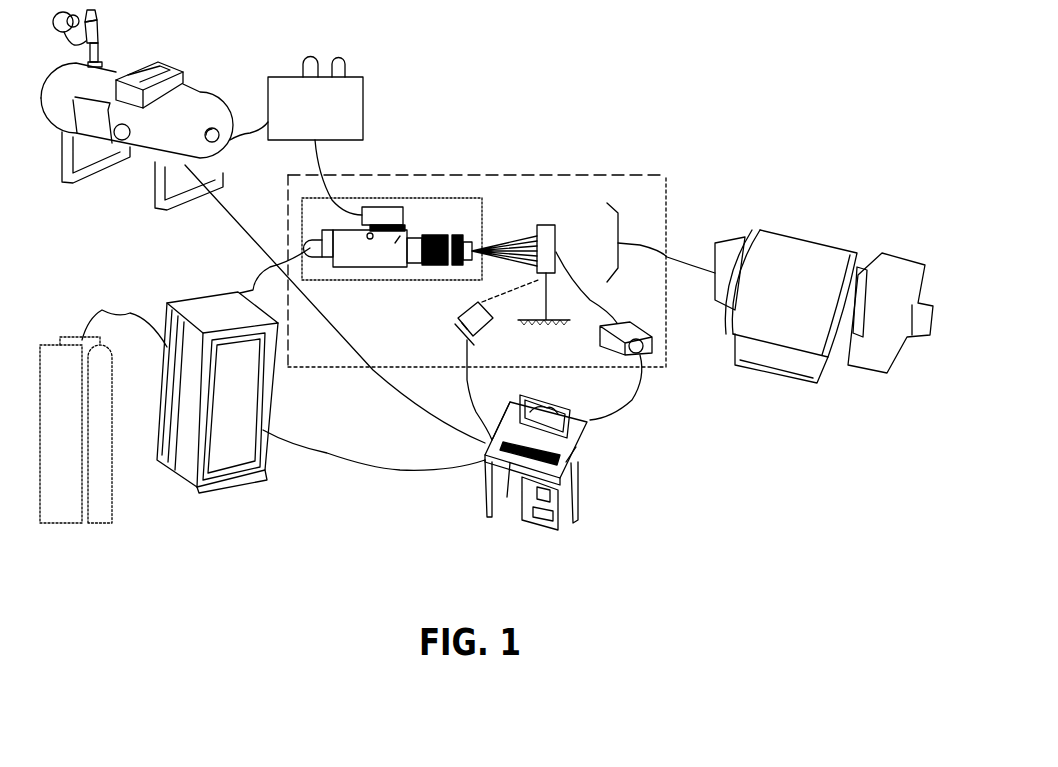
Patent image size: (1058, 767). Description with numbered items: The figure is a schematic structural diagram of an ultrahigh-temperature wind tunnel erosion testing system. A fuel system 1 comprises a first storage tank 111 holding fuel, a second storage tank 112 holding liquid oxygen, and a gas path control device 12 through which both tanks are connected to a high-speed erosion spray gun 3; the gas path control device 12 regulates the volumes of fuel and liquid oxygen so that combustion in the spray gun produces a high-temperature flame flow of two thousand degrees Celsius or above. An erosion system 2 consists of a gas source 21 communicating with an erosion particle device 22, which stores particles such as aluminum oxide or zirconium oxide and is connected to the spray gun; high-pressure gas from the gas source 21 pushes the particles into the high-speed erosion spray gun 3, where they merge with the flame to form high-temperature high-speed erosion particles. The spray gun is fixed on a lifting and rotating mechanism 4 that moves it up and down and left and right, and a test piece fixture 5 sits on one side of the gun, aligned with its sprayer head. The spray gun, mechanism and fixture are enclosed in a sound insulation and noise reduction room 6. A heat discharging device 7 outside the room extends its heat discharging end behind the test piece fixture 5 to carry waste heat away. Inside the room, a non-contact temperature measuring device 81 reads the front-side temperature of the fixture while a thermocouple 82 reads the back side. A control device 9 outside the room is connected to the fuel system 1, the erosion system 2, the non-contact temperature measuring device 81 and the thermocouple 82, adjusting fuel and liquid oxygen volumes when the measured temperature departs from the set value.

The fuel system 1 is at (128, 298).
The first storage tank 111 is at (57, 507).
The second storage tank 112 is at (98, 492).
The gas path control device 12 is at (270, 473).
The erosion system 2 is at (258, 57).
The gas source 21 is at (113, 72).
The erosion particle device 22 is at (362, 102).
The high-speed erosion spray gun 3 is at (410, 215).
The lifting and rotating mechanism 4 is at (480, 187).
The test piece fixture 5 is at (537, 227).
The sound insulation and noise reduction room 6 is at (667, 178).
The heat discharging device 7 is at (810, 242).
The non-contact temperature measuring device 81 is at (458, 327).
The thermocouple 82 is at (555, 242).
The control device 9 is at (580, 470).